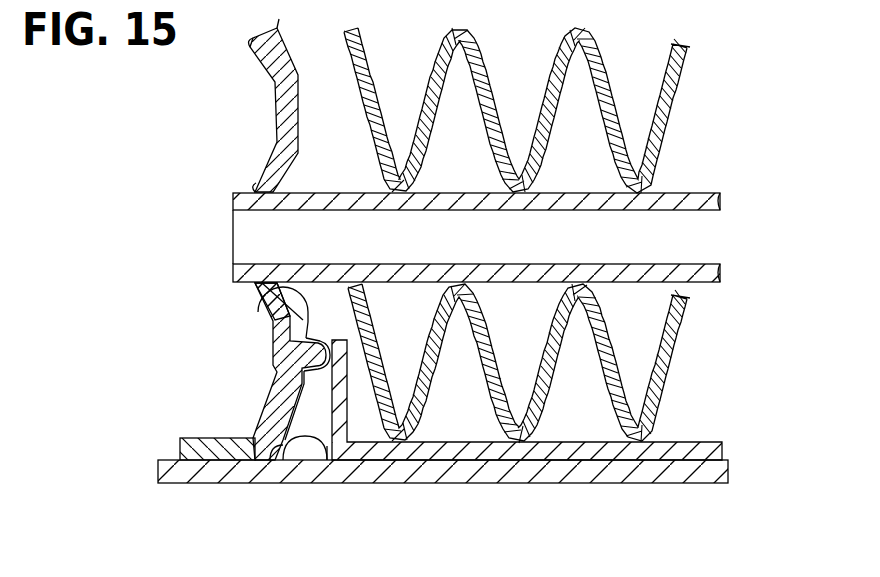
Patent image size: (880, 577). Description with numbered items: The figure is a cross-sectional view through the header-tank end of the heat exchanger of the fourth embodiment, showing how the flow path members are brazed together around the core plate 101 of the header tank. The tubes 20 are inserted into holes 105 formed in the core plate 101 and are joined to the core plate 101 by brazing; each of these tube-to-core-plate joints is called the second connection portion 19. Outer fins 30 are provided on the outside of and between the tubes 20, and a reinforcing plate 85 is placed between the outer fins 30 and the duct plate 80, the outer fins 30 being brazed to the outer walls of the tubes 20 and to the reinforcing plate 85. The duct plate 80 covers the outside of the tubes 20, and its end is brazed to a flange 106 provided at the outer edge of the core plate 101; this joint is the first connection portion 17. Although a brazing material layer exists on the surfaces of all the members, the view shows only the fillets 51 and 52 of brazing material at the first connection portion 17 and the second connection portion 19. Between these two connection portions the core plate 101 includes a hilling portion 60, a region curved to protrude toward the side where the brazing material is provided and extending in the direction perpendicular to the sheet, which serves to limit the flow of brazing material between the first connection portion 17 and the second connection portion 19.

The first connection portion 17 is at (290, 462).
The second connection portion 19 is at (267, 306).
The tube 20 is at (693, 183).
The outer fin 30 is at (680, 72).
The fillet 51 is at (328, 462).
The fillet 52 is at (300, 340).
The hilling portion 60 is at (318, 365).
The duct plate 80 is at (488, 472).
The reinforcing plate 85 is at (680, 441).
The core plate 101 is at (285, 398).
The hole 105 is at (233, 273).
The flange 106 is at (200, 438).